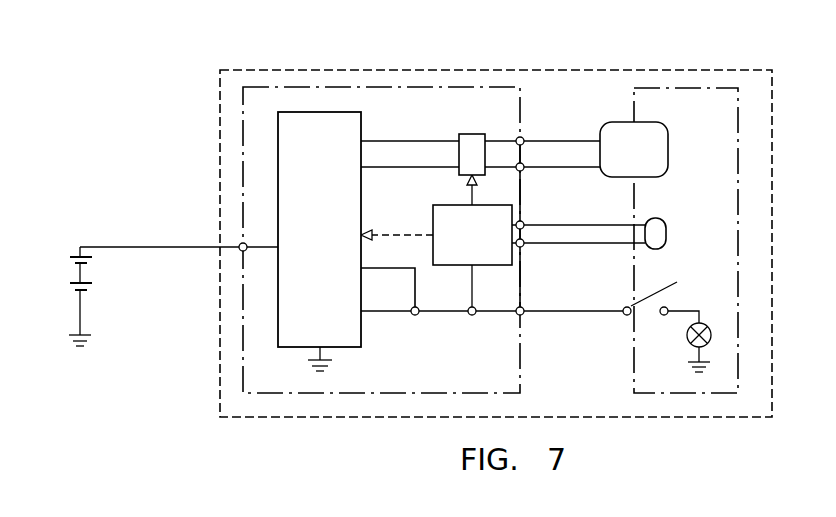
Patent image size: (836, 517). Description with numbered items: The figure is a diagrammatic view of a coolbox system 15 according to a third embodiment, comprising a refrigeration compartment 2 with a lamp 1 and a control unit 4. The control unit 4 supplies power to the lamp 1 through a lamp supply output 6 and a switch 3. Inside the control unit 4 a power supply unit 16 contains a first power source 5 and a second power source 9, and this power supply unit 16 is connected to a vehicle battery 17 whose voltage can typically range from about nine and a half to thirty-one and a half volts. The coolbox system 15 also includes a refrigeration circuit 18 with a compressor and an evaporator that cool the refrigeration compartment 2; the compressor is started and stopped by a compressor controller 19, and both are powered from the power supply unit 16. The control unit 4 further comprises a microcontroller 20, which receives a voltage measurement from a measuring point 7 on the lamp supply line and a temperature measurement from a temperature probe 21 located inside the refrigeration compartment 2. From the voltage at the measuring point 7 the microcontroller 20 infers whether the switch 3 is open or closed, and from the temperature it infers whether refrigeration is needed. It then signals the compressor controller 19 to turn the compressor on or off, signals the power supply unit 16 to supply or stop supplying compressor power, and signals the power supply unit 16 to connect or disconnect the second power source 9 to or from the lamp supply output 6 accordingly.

The lamp 1 is at (710, 340).
The refrigeration compartment 2 is at (713, 139).
The switch 3 is at (643, 300).
The control unit 4 is at (403, 100).
The first power source 5 is at (358, 311).
The lamp supply output 6 is at (523, 315).
The measuring point 7 is at (473, 316).
The second power source 9 is at (358, 268).
The coolbox system 15 is at (572, 70).
The power supply unit 16 is at (292, 140).
The vehicle battery 17 is at (70, 270).
The refrigeration circuit 18 is at (648, 133).
The compressor controller 19 is at (470, 143).
The microcontroller 20 is at (470, 243).
The temperature probe 21 is at (656, 233).